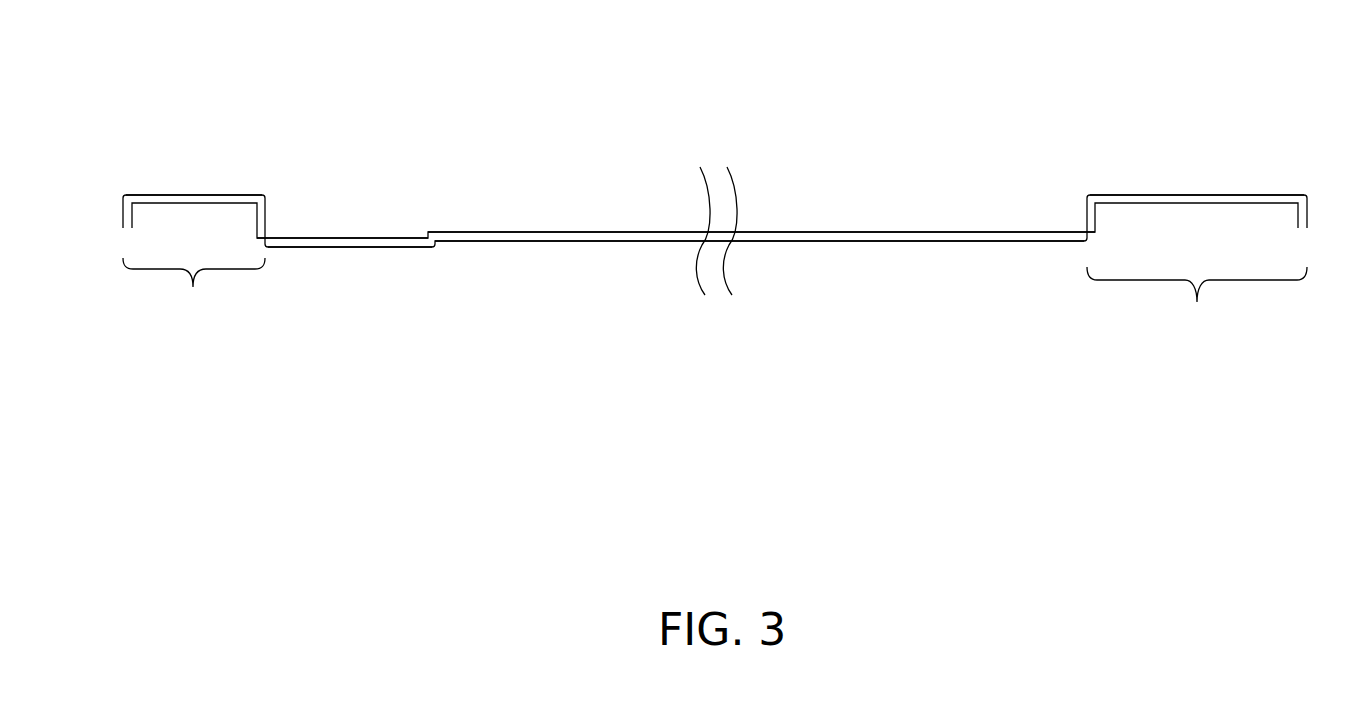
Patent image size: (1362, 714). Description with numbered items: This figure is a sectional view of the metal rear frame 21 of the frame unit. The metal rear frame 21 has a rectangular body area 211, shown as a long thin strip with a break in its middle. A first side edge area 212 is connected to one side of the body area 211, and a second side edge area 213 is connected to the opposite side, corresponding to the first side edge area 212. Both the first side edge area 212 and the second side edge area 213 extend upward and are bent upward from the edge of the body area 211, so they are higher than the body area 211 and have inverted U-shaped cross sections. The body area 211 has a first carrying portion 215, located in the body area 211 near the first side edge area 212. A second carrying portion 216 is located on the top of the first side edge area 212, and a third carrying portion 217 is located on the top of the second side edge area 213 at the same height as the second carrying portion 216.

The metal rear frame 21 is at (948, 155).
The body area 211 is at (577, 258).
The first side edge area 212 is at (194, 294).
The second side edge area 213 is at (1197, 305).
The first carrying portion 215 is at (368, 245).
The second carrying portion 216 is at (192, 195).
The third carrying portion 217 is at (1198, 195).